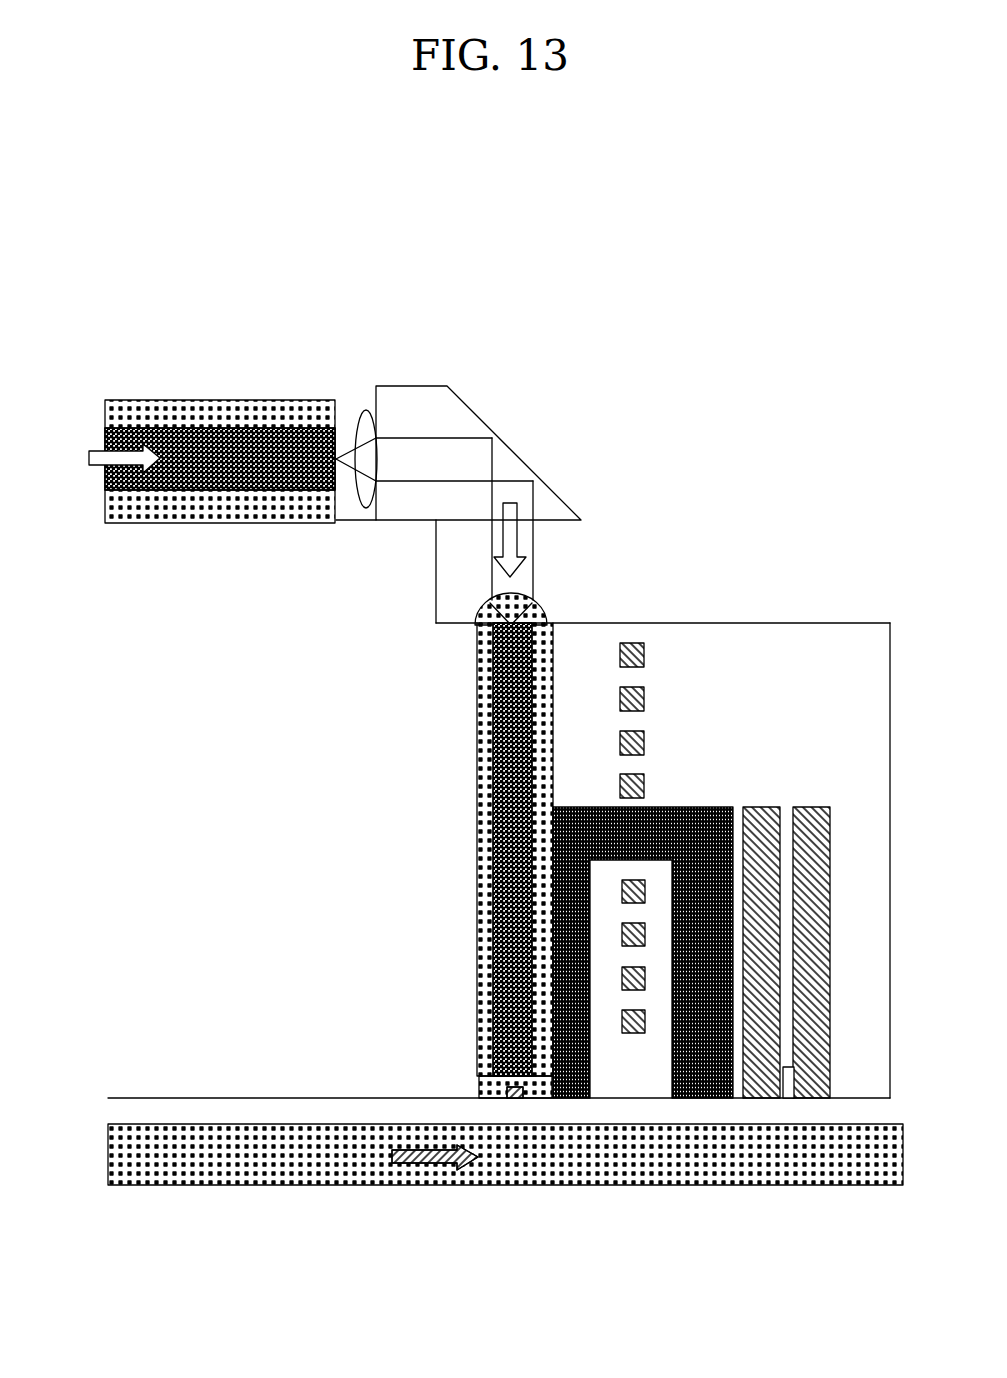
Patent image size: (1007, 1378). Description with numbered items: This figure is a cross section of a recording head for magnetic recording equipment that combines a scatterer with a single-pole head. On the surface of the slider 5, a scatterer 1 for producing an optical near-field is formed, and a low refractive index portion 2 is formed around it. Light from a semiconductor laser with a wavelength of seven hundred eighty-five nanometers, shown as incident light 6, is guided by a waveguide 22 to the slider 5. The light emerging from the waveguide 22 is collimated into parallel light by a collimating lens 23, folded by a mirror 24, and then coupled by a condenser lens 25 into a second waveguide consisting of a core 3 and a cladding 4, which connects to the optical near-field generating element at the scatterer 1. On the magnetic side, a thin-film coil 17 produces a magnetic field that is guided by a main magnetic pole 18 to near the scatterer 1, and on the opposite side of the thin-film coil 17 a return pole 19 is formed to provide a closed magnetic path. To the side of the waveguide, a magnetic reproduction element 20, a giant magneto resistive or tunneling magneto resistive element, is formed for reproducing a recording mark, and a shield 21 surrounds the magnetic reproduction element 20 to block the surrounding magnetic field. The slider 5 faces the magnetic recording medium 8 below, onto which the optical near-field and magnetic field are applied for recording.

The scatterer 1 is at (516, 1100).
The low refractive index portion 2 is at (483, 1084).
The core 3 is at (510, 780).
The cladding 4 is at (481, 833).
The slider 5 is at (180, 648).
The incident light 6 is at (51, 475).
The magnetic recording medium 8 is at (275, 1150).
The thin-film coil 17 is at (645, 689).
The main magnetic pole 18 is at (563, 983).
The return pole 19 is at (706, 1048).
The magnetic reproduction element 20 is at (790, 1100).
The shield 21 is at (813, 850).
The waveguide 22 is at (240, 454).
The collimating lens 23 is at (380, 419).
The mirror 24 is at (528, 461).
The condenser lens 25 is at (546, 602).